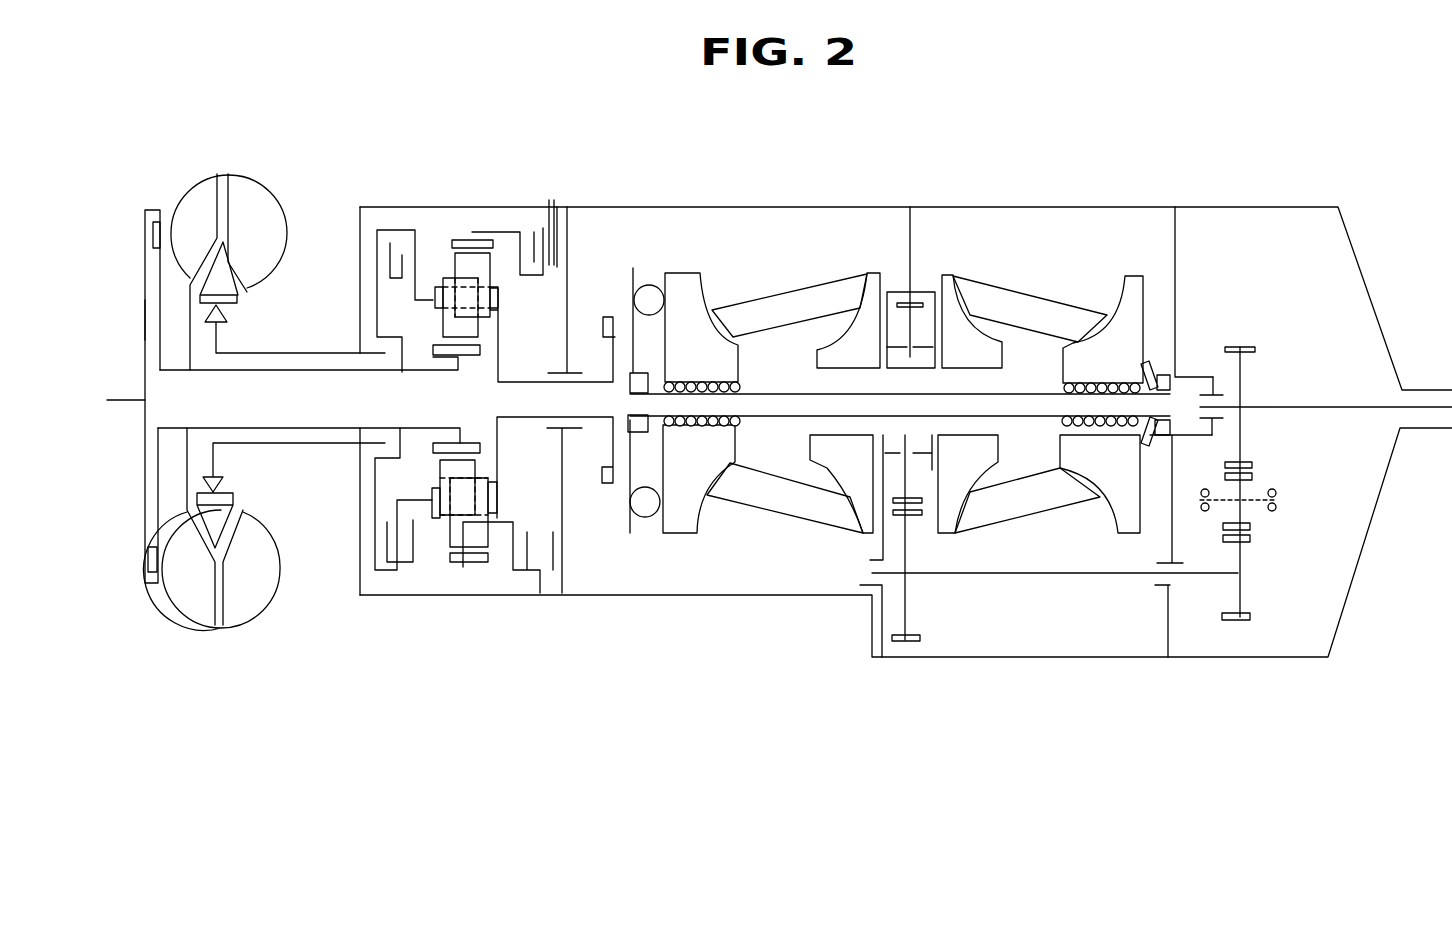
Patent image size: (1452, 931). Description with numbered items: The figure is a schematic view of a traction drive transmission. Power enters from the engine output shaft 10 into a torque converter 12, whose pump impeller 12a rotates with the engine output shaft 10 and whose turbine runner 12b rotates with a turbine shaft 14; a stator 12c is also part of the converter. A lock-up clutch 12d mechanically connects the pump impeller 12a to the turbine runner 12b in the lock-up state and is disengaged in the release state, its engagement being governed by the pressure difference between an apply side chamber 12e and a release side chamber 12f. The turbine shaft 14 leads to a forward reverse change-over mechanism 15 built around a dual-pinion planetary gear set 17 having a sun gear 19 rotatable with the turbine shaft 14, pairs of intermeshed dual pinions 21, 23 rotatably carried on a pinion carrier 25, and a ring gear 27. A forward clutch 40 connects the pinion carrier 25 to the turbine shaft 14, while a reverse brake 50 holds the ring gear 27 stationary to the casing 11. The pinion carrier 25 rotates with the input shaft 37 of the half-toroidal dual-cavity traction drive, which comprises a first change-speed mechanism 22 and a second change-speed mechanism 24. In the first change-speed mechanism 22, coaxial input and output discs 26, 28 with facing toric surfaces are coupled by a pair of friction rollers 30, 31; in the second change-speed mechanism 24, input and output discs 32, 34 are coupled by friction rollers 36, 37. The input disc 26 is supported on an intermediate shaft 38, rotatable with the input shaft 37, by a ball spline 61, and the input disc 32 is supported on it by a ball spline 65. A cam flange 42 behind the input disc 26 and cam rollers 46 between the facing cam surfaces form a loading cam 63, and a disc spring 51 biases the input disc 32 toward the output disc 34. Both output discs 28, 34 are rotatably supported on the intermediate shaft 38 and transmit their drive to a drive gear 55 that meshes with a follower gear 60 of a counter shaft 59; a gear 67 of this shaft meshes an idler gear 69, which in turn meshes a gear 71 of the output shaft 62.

The engine output shaft 10 is at (125, 405).
The casing 11 is at (582, 598).
The torque converter 12 is at (240, 353).
The pump impeller 12a is at (258, 198).
The turbine runner 12b is at (193, 198).
The stator 12c is at (218, 285).
The lock-up clutch 12d is at (158, 277).
The apply side chamber 12e is at (165, 475).
The release side chamber 12f is at (147, 327).
The turbine shaft 14 is at (285, 443).
The forward reverse change-over mechanism 15 is at (460, 379).
The dual-pinion planetary gear set 17 is at (428, 540).
The sun gear 19 is at (468, 362).
The dual pinion 21 is at (493, 266).
The dual pinion 23 is at (443, 323).
The pinion carrier 25 is at (402, 312).
The ring gear 27 is at (465, 232).
The first change-speed mechanism 22 is at (870, 390).
The second change-speed mechanism 24 is at (830, 384).
The input disc 26 is at (687, 272).
The output disc 28 is at (877, 272).
The friction roller 30 is at (813, 292).
The friction roller 31 is at (795, 508).
The input disc 32 is at (1136, 273).
The output disc 34 is at (952, 272).
The friction roller 36 is at (1008, 294).
The input shaft 37 is at (995, 515).
The intermediate shaft 38 is at (750, 418).
The forward clutch 40 is at (408, 243).
The cam flange 42 is at (578, 400).
The cam rollers 46 is at (651, 285).
The reverse brake 50 is at (552, 200).
The disc spring 51 is at (1148, 365).
The drive gear 55 is at (922, 291).
The counter shaft 59 is at (1053, 578).
The follower gear 60 is at (902, 640).
The ball spline 61 is at (743, 385).
The output shaft 62 is at (1352, 405).
The loading cam 63 is at (638, 262).
The ball spline 65 is at (1062, 422).
The gear 67 is at (1236, 622).
The idler gear 69 is at (1252, 525).
The gear 71 is at (1250, 348).